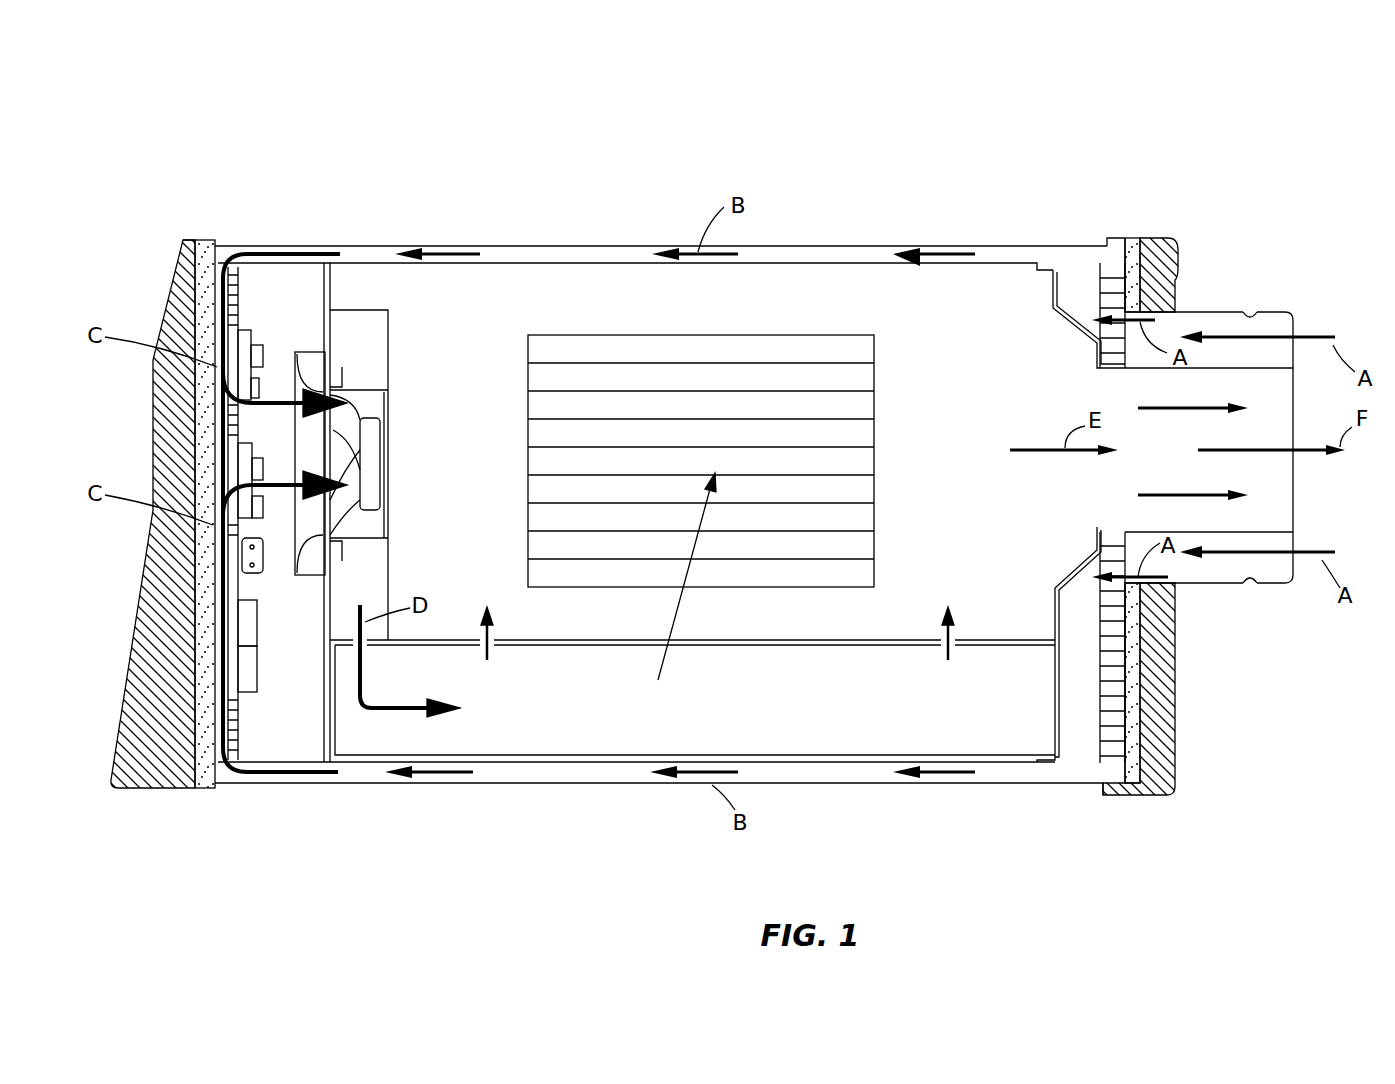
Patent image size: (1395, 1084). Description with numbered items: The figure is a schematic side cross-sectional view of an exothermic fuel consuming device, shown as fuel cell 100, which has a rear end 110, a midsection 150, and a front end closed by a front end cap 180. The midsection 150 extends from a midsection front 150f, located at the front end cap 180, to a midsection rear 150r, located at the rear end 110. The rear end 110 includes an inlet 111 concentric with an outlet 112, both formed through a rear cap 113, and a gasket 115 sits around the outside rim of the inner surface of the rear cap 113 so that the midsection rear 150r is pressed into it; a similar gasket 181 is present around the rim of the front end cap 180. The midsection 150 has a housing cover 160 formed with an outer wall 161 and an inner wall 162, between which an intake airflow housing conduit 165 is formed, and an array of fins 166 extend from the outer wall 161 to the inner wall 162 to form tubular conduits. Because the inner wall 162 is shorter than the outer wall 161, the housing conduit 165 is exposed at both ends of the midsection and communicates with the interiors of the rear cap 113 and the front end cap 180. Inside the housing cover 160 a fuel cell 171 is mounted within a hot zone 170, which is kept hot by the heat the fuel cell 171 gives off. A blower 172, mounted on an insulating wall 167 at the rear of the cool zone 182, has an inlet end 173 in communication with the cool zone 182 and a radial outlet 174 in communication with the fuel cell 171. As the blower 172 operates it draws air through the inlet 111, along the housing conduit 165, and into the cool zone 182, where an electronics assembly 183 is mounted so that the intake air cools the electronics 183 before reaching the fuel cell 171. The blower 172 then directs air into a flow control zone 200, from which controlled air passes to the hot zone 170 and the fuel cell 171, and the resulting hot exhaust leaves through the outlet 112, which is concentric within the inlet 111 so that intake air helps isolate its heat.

The fuel cell 100 is at (842, 100).
The rear end 110 is at (1167, 245).
The inlet 111 is at (1310, 320).
The outlet 112 is at (1300, 500).
The rear cap 113 is at (1175, 632).
The gasket 115 is at (1145, 245).
The midsection 150 is at (572, 246).
The midsection front 150f is at (223, 785).
The midsection rear 150r is at (1105, 790).
The housing cover 160 is at (777, 247).
The outer wall 161 is at (1050, 265).
The inner wall 162 is at (768, 262).
The intake airflow housing conduit 165 is at (1130, 245).
The fins 166 is at (235, 293).
The insulating wall 167 is at (328, 292).
The hot zone 170 is at (737, 628).
The fuel cell 171 is at (677, 589).
The blower 172 is at (348, 503).
The inlet end 173 is at (297, 473).
The radial outlet 174 is at (348, 535).
The front end cap 180 is at (157, 790).
The gasket 181 is at (190, 287).
The cool zone 182 is at (272, 628).
The electronics assembly 183 is at (242, 322).
The flow control zone 200 is at (737, 711).